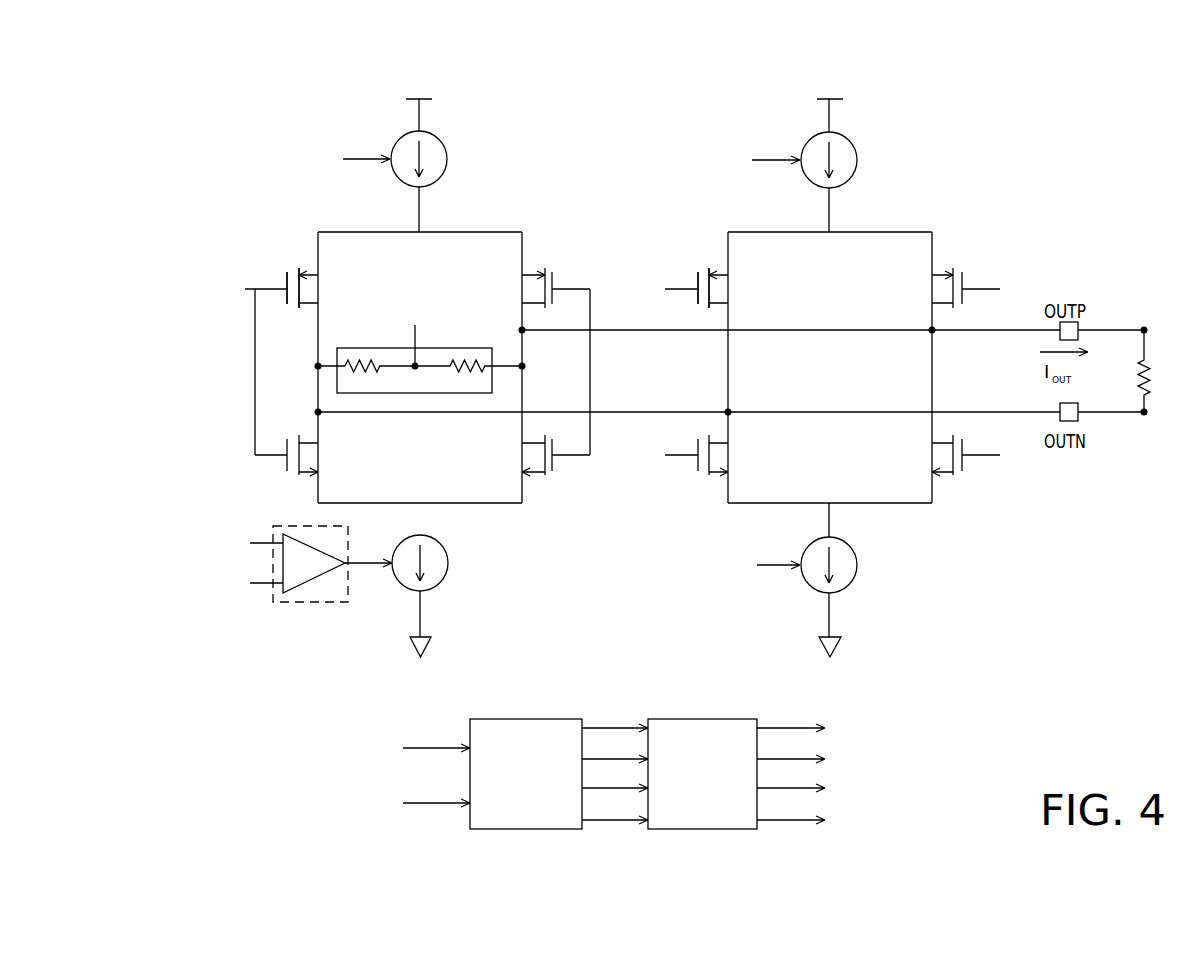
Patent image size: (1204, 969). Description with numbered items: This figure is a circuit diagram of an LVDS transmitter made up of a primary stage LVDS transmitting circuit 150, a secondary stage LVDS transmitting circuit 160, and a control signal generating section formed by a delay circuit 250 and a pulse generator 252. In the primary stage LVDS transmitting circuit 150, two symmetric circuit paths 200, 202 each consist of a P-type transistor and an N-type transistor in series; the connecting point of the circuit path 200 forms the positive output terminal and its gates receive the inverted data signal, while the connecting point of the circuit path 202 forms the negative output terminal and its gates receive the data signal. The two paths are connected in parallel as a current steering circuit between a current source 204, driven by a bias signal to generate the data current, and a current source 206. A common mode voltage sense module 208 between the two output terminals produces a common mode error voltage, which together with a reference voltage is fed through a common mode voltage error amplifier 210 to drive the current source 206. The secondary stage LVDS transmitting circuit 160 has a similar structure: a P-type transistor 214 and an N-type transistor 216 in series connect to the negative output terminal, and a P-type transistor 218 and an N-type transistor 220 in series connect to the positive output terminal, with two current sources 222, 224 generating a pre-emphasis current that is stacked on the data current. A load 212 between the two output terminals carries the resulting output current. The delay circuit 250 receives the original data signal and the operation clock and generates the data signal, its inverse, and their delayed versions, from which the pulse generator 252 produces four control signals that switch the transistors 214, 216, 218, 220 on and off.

The primary stage LVDS transmitting circuit 150 is at (428, 364).
The secondary stage LVDS transmitting circuit 160 is at (1031, 154).
The circuit path 200 is at (553, 262).
The circuit path 202 is at (330, 307).
The current source 204 is at (447, 159).
The current source 206 is at (448, 563).
The common mode voltage sense module 208 is at (452, 348).
The common mode voltage error amplifier 210 is at (312, 604).
The load 212 is at (1148, 360).
The P-type transistor 214 is at (695, 279).
The N-type transistor 216 is at (693, 470).
The P-type transistor 218 is at (965, 279).
The N-type transistor 220 is at (967, 470).
The current source 222 is at (857, 160).
The current source 224 is at (857, 565).
The delay circuit 250 is at (543, 718).
The pulse generator 252 is at (720, 718).